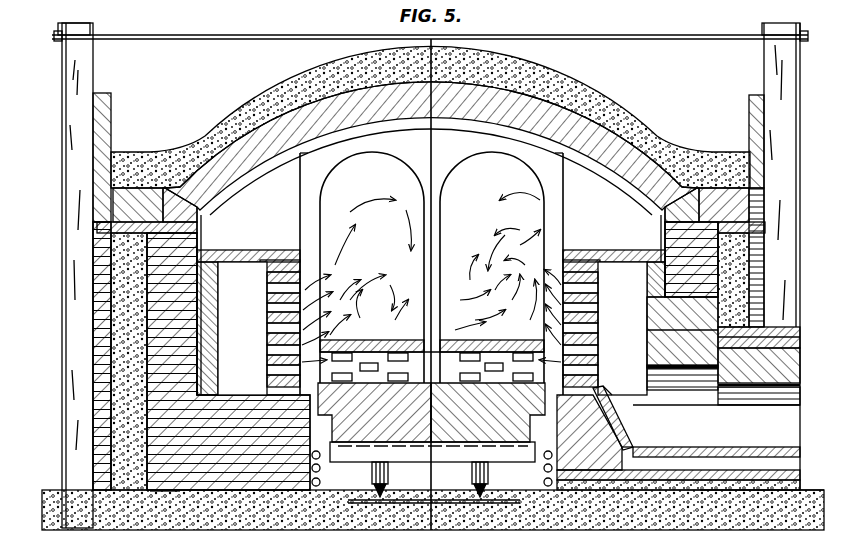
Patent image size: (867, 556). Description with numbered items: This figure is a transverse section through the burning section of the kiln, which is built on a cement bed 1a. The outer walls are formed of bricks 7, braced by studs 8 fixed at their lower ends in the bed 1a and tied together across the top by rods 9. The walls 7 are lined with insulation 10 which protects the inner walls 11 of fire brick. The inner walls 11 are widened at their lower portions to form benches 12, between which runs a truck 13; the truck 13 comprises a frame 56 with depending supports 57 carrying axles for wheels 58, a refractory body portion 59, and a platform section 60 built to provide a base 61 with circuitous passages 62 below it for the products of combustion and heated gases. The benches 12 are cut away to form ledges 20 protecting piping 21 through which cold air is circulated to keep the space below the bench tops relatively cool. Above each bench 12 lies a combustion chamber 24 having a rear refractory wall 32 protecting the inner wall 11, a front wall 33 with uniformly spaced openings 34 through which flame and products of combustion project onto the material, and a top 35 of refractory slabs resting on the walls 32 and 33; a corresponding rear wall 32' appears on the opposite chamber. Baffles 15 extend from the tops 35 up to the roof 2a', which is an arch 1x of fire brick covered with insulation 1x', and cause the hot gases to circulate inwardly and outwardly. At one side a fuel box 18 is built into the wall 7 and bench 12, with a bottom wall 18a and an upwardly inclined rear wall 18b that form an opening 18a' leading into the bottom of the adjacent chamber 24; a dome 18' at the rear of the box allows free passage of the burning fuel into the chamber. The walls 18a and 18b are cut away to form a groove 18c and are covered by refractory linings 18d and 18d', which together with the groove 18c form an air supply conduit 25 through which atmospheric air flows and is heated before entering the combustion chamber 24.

The bed 1a is at (163, 520).
The arch 1x is at (431, 284).
The insulation 1x' is at (589, 57).
The roof 2a' is at (430, 117).
The bricks 7 is at (102, 282).
The studs 8 is at (72, 163).
The rods 9 is at (190, 39).
The insulation 10 is at (126, 340).
The inner walls 11 is at (202, 236).
The benches 12 is at (228, 492).
The trucks 13 is at (466, 452).
The baffles 15 is at (301, 153).
The fuel boxes 18 is at (723, 370).
The bottom wall 18a is at (716, 443).
The rear wall 18b is at (626, 413).
The groove 18c is at (795, 463).
The lining 18d is at (716, 424).
The lining 18d' is at (644, 439).
The dome 18' is at (668, 374).
The opening 18a' is at (611, 384).
The ledges 20 is at (332, 428).
The piping 21 is at (313, 456).
The combustion chambers 24 is at (432, 328).
The air supply conduit 25 is at (768, 462).
The rear refractory wall 32 is at (380, 274).
The heater wall 32' is at (638, 282).
The front wall 33 is at (267, 330).
The openings 34 is at (267, 288).
The top 35 is at (236, 250).
The frame 56 is at (356, 452).
The depending supports 57 is at (392, 478).
The wheels 58 is at (378, 496).
The body portion 59 is at (510, 452).
The platform section 60 is at (394, 343).
The base 61 is at (368, 343).
The circuitous passages 62 is at (388, 373).